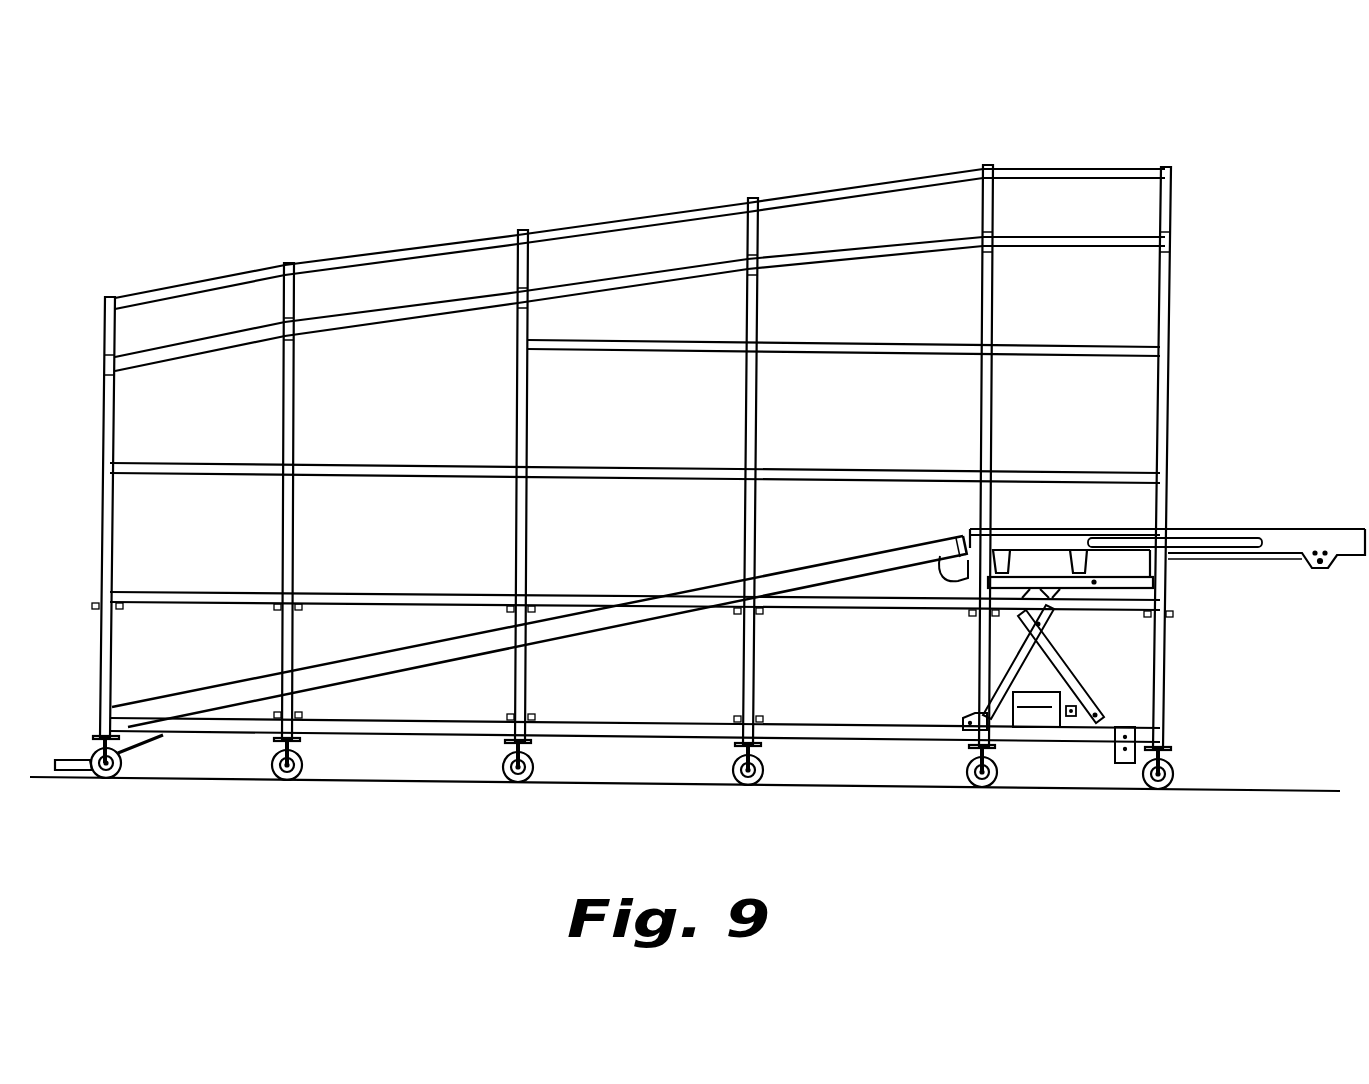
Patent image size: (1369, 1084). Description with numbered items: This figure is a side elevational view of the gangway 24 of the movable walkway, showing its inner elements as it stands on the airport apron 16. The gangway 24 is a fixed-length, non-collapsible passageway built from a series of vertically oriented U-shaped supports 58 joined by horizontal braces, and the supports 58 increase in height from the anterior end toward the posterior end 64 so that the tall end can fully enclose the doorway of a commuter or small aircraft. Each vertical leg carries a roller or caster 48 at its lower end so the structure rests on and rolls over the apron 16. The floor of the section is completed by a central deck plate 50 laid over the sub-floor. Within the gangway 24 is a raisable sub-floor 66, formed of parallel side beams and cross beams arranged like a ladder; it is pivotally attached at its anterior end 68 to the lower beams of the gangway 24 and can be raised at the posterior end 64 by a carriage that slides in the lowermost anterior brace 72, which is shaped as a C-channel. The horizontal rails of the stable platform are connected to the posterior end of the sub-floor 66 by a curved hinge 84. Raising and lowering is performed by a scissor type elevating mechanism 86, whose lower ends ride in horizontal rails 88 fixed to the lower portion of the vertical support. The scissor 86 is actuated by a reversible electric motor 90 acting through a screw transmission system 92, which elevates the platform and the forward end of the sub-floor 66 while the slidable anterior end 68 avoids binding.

The airport apron 16 is at (1297, 790).
The gangway 24 is at (580, 168).
The roller or caster 48 is at (503, 768).
The central deck plate 50 is at (379, 252).
The vertically oriented U-shaped support 58 is at (290, 258).
The posterior end 64 is at (572, 638).
The raisable sub-floor 66 is at (77, 586).
The anterior end of the sub-floor 68 is at (1213, 326).
The lowermost anterior brace 72 is at (218, 723).
The curved hinge 84 is at (937, 572).
The scissor type elevating mechanism 86 is at (1062, 662).
The horizontal rails 88 is at (1137, 713).
The reversible electric motor 90 is at (1035, 718).
The screw transmission system 92 is at (1075, 713).